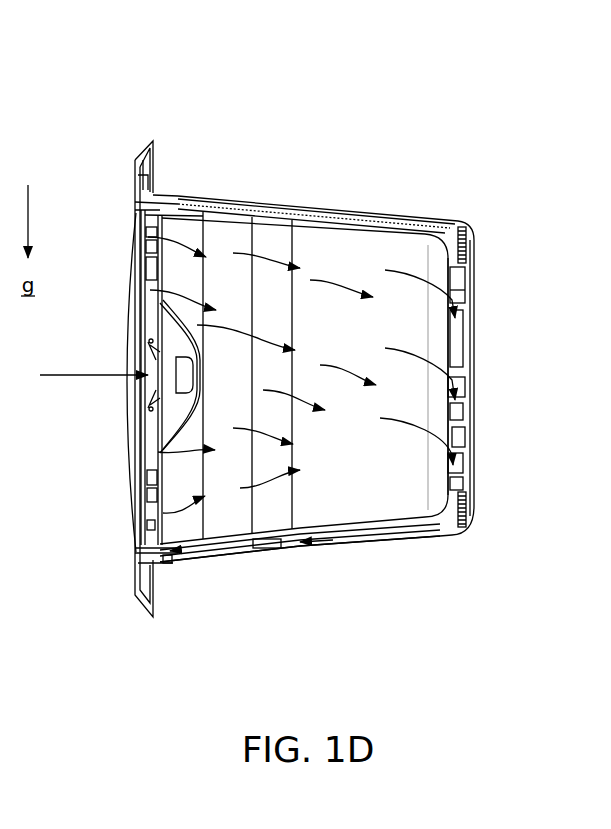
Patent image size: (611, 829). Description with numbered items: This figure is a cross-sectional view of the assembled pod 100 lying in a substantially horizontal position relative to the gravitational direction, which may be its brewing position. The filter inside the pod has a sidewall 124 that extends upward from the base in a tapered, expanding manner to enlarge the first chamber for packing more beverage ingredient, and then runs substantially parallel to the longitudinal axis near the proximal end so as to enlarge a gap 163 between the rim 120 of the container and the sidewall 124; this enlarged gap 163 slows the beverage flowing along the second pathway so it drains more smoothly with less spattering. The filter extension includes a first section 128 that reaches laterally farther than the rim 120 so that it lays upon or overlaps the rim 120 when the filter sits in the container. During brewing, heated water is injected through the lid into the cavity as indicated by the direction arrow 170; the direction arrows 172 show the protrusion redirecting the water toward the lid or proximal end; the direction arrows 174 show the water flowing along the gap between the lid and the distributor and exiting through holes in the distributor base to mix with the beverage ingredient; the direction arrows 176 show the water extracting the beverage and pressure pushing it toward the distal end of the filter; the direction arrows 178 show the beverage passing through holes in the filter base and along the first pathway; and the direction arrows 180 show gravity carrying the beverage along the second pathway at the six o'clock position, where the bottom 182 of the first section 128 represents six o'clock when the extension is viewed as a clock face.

The pod 100 is at (328, 84).
The rim 120 is at (143, 613).
The sidewall 124 is at (263, 543).
The first section 128 is at (133, 175).
The gap 163 is at (160, 567).
The direction arrow 170 is at (75, 375).
The direction arrows 172 is at (185, 362).
The direction arrows 174 is at (182, 232).
The direction arrows 176 is at (265, 250).
The direction arrows 178 is at (450, 303).
The direction arrows 180 is at (223, 552).
The bottom 182 is at (138, 557).